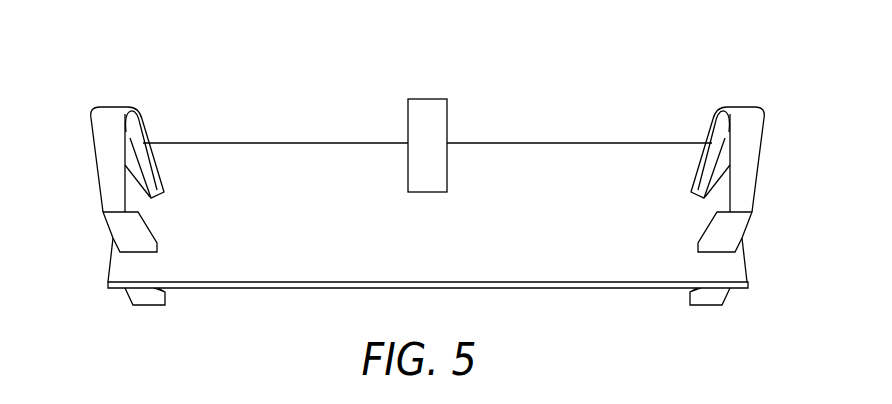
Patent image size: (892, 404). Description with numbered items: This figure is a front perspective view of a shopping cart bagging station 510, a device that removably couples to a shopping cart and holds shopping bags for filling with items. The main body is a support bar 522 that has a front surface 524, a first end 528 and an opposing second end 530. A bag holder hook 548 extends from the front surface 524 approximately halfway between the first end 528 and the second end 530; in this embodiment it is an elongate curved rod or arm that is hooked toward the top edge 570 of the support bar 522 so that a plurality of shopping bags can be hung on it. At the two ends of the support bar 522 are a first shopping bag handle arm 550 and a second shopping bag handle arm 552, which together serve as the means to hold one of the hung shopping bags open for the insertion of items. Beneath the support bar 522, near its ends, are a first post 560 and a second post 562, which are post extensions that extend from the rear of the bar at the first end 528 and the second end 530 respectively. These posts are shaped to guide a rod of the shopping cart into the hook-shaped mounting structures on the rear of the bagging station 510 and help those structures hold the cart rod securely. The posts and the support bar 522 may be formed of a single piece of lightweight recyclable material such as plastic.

The shopping cart bagging station 510 is at (380, 66).
The support bar 522 is at (287, 153).
The front surface 524 is at (578, 236).
The first end 528 is at (152, 135).
The second end 530 is at (703, 135).
The bag holder hook 548 is at (428, 108).
The first shopping bag handle arm 550 is at (98, 126).
The second shopping bag handle arm 552 is at (750, 150).
The first post 560 is at (148, 298).
The second post 562 is at (708, 298).
The top edge 570 is at (552, 143).